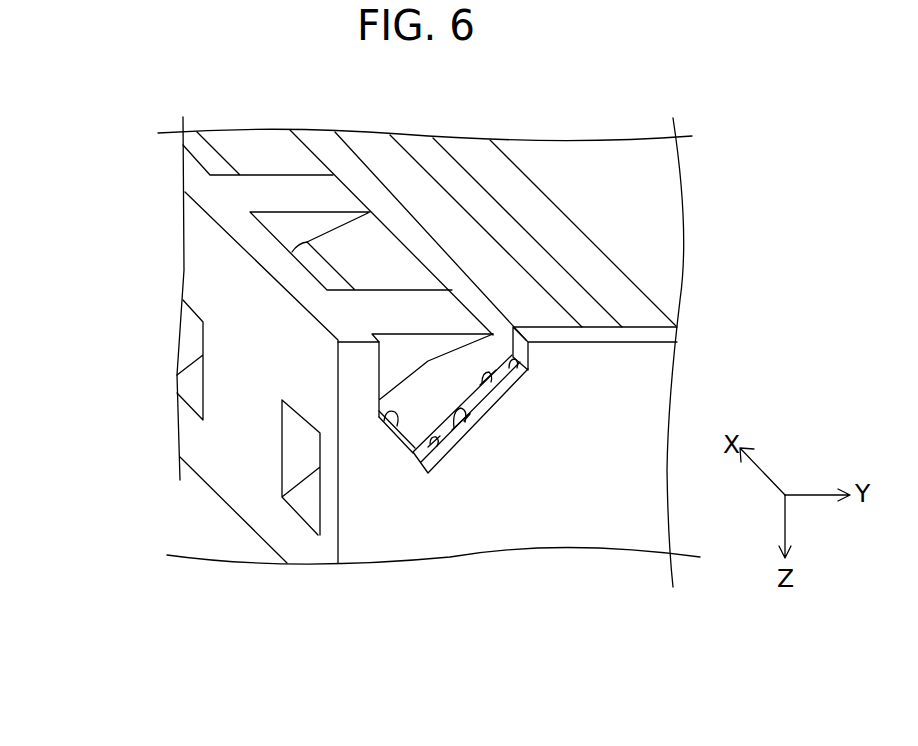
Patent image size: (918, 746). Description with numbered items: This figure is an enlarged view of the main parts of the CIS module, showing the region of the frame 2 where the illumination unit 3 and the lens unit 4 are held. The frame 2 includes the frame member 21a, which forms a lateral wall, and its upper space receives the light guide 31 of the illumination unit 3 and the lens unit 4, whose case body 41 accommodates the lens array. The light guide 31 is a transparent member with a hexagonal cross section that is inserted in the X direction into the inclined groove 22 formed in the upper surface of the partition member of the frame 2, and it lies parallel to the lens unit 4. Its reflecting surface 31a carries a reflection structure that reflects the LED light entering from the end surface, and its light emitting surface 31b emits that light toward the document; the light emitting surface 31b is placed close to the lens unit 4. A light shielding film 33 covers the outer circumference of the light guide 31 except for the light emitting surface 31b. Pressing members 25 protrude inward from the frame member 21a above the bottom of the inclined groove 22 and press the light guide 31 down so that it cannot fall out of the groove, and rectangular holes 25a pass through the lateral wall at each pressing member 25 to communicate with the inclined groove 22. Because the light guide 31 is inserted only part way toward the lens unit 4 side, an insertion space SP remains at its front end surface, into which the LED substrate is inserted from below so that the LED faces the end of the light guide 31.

The frame 2 is at (500, 172).
The illumination unit 3 is at (266, 134).
The lens unit 4 is at (420, 138).
The case body 41 is at (388, 212).
The frame member 21a is at (215, 272).
The inclined groove 22 is at (455, 445).
The pressing member 25 is at (250, 192).
The hole 25a is at (302, 500).
The light guide 31 is at (410, 422).
The reflecting surface 31a is at (390, 433).
The light emitting surface 31b is at (513, 327).
The light shielding film 33 is at (513, 368).
The insertion space SP is at (488, 428).